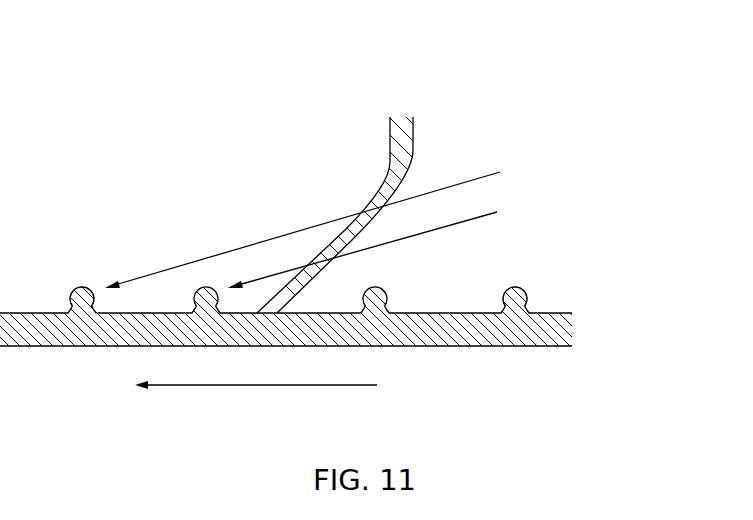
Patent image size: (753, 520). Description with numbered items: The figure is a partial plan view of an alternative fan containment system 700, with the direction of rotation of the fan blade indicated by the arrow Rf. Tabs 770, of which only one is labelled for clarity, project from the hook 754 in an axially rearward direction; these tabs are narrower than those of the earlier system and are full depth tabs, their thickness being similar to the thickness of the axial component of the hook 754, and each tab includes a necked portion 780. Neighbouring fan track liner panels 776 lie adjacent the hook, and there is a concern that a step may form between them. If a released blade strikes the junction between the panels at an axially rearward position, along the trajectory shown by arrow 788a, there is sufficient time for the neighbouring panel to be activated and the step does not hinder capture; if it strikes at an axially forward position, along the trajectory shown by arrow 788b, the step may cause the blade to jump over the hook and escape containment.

The fan containment system 700 is at (620, 106).
The hook 754 is at (80, 336).
The tabs 770 is at (529, 298).
The fan track liner panels 776 is at (303, 214).
The necked portion 780 is at (494, 338).
The arrow (trajectory) 788a is at (320, 223).
The arrow (trajectory) 788b is at (435, 232).
The arrow Rf is at (256, 403).